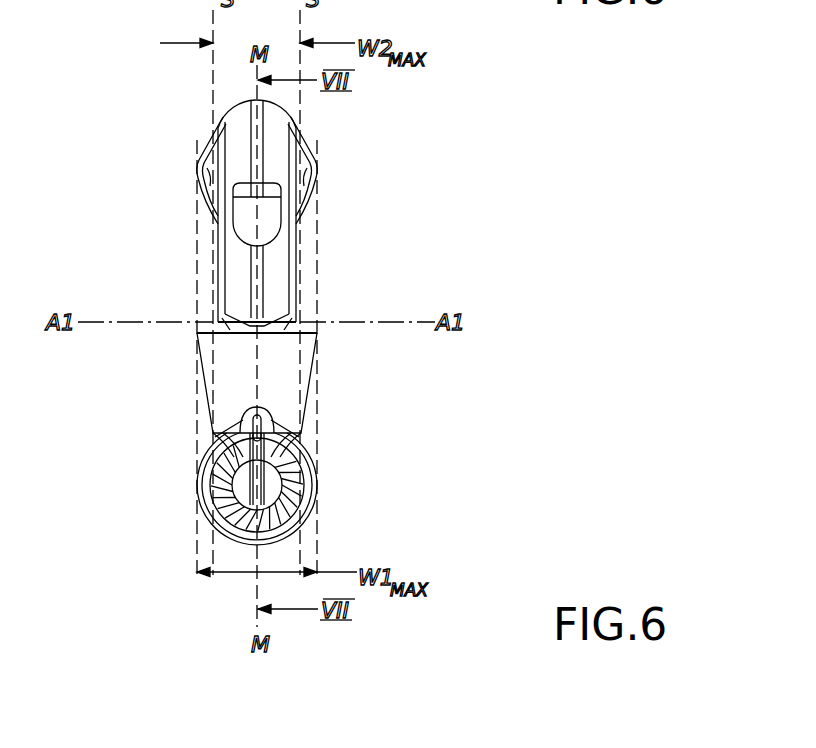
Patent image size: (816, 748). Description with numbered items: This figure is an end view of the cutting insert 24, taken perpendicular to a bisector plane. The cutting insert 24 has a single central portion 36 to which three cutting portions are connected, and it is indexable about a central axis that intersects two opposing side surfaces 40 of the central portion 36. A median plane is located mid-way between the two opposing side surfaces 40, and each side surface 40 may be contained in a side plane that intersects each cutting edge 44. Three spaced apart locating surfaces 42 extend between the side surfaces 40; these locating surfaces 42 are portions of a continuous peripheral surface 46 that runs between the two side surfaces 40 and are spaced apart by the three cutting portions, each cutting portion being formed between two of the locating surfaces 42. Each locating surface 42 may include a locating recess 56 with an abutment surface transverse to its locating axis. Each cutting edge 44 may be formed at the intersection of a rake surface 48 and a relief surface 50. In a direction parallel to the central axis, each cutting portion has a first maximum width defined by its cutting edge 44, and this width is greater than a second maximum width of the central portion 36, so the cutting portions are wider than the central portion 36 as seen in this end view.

The cutting insert 24 is at (337, 142).
The central portion 36 is at (216, 291).
The side surfaces 40 is at (213, 268).
The locating surfaces 42 is at (272, 118).
The cutting edge 44 is at (199, 205).
The peripheral surface 46 is at (291, 306).
The rake surface 48 is at (290, 498).
The relief surface 50 is at (200, 168).
The locating recess 56 is at (272, 208).